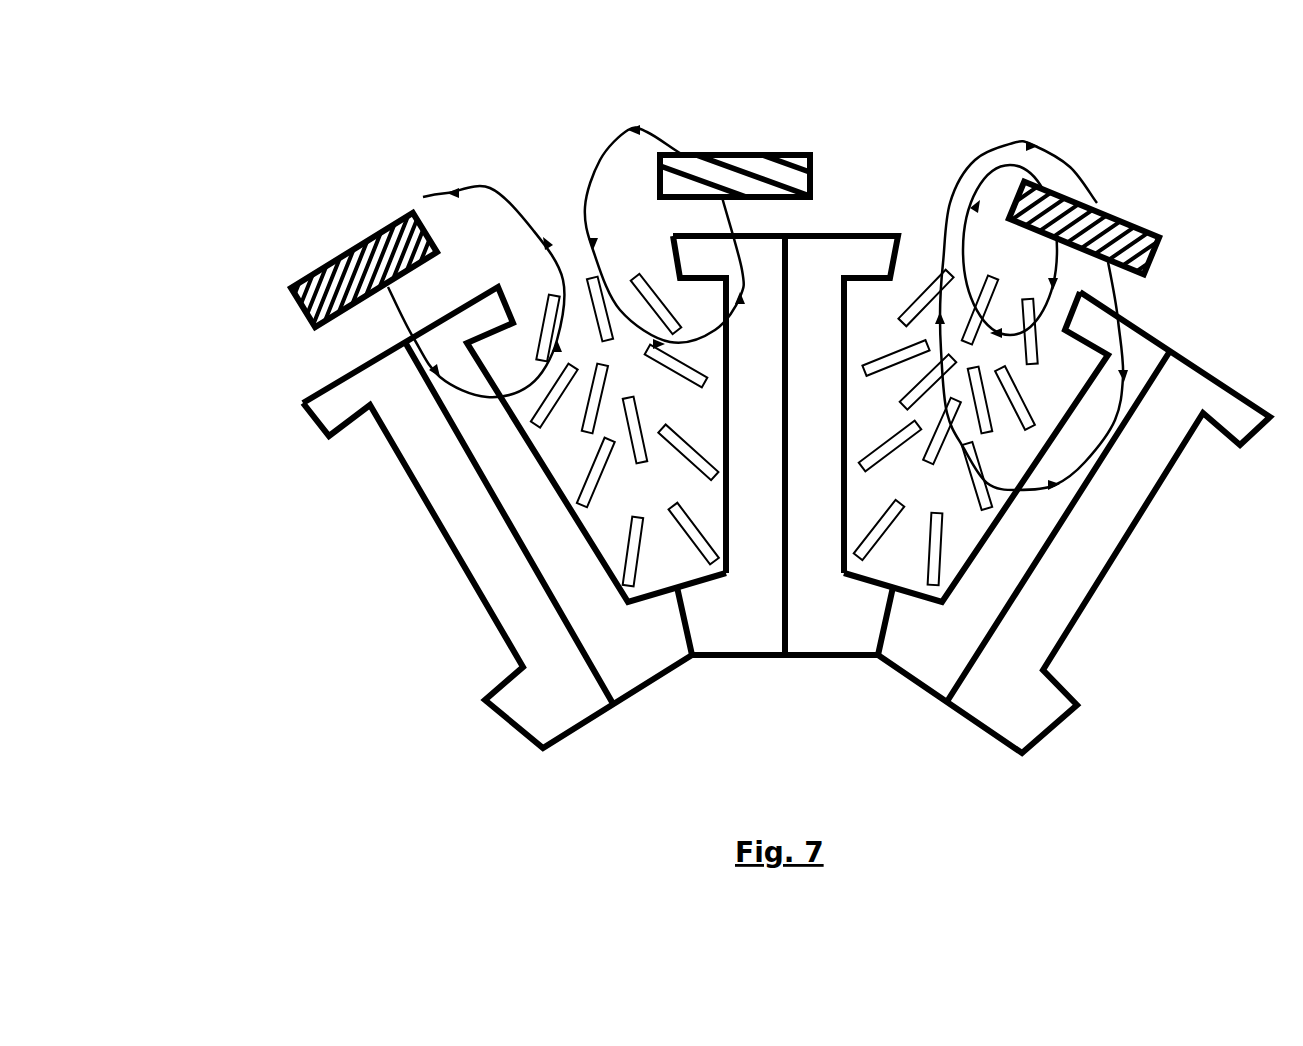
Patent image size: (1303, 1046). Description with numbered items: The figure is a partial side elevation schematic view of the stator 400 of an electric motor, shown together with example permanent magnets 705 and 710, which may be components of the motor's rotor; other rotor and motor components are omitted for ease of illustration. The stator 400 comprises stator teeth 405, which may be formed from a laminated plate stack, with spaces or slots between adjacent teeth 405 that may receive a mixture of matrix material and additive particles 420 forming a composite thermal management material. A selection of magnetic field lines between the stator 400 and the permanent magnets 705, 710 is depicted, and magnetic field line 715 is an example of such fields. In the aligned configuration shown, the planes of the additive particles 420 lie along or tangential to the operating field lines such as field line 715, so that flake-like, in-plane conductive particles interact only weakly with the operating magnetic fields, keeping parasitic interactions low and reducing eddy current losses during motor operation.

The stator 400 is at (305, 595).
The stator teeth 405 is at (437, 523).
The additive particles 420 is at (582, 290).
The permanent magnet 705 is at (300, 285).
The permanent magnet 710 is at (797, 150).
The magnetic field line 715 is at (436, 192).